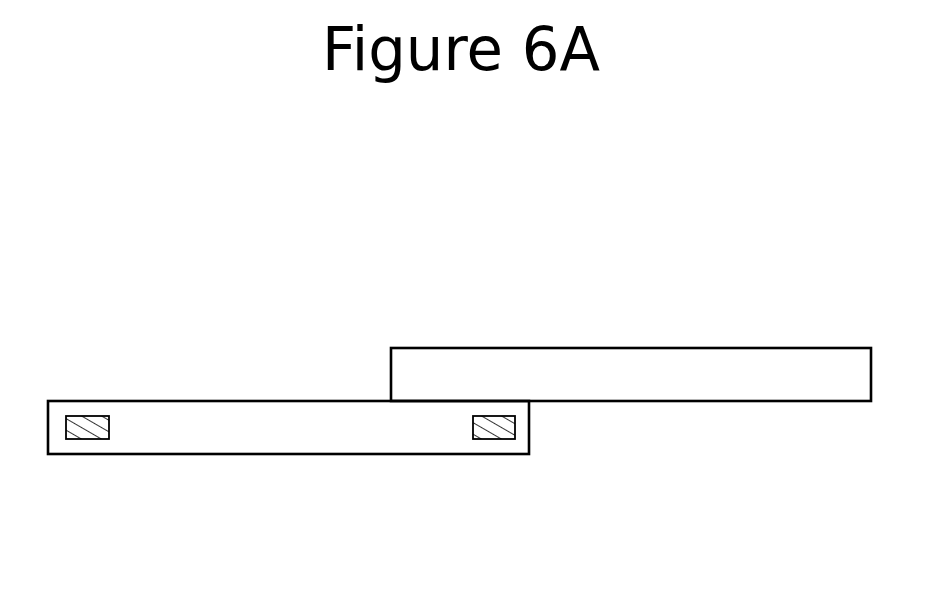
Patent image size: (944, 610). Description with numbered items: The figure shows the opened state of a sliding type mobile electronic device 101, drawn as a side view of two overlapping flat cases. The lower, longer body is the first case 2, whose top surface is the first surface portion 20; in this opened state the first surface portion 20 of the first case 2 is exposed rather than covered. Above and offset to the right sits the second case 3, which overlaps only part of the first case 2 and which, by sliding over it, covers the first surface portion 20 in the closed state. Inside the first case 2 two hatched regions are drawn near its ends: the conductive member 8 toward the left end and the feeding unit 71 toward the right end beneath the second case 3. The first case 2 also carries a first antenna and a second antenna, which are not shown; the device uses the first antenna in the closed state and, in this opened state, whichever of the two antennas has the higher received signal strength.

The sliding type mobile electronic device 101 is at (403, 300).
The first case 2 is at (212, 445).
The first surface portion 20 is at (213, 401).
The second case 3 is at (684, 357).
The conductive member 8 is at (82, 440).
The feeding unit 71 is at (492, 442).